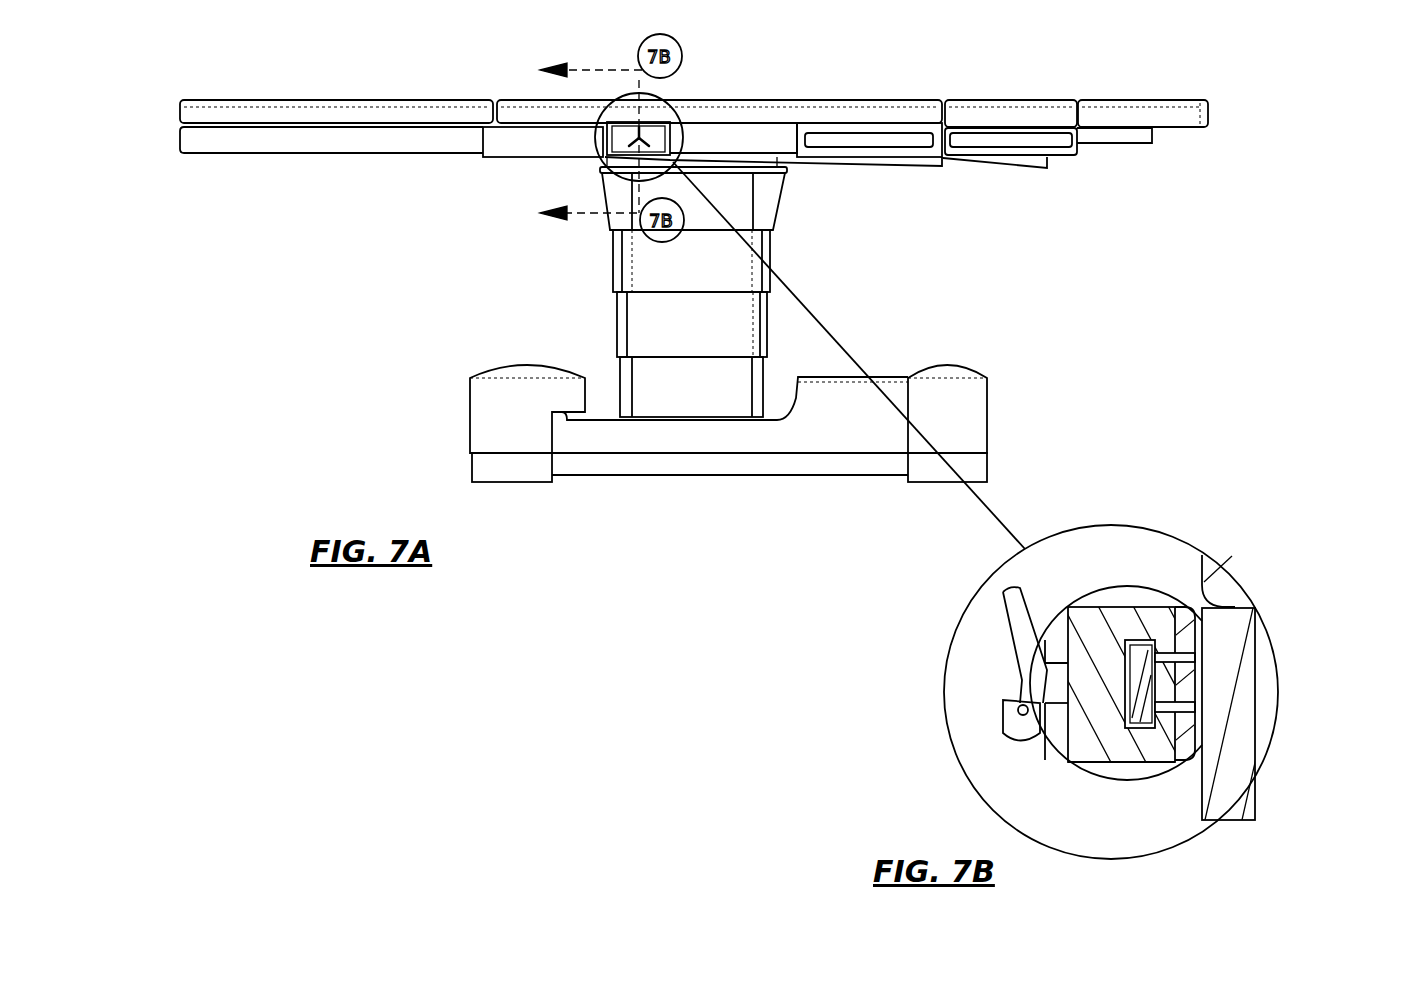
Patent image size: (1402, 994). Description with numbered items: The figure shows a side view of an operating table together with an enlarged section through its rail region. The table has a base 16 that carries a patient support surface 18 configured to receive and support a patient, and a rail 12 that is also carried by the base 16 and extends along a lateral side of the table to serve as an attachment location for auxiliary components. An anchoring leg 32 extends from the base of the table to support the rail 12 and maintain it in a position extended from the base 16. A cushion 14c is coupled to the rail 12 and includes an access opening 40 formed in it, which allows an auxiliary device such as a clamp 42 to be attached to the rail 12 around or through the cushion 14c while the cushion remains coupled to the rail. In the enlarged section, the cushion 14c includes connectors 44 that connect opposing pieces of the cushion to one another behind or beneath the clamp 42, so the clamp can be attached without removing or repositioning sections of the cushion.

In FIG. 7A, the rail 12 is at (818, 138).
In FIG. 7B, the rail 12 is at (1137, 712).
In FIG. 7A, the cushion 14c is at (516, 130).
In FIG. 7B, the cushion 14c is at (1105, 768).
In FIG. 7A, the base 16 is at (426, 143).
In FIG. 7B, the base 16 is at (1243, 757).
In FIG. 7A, the patient support surface 18 is at (733, 105).
In FIG. 7B, the patient support surface 18 is at (1223, 580).
In FIG. 7B, the anchoring leg 32 is at (1187, 682).
In FIG. 7A, the access opening 40 is at (660, 105).
In FIG. 7A, the clamp 42 is at (622, 137).
In FIG. 7B, the clamp 42 is at (1093, 622).
In FIG. 7B, the connectors 44 is at (1185, 615).